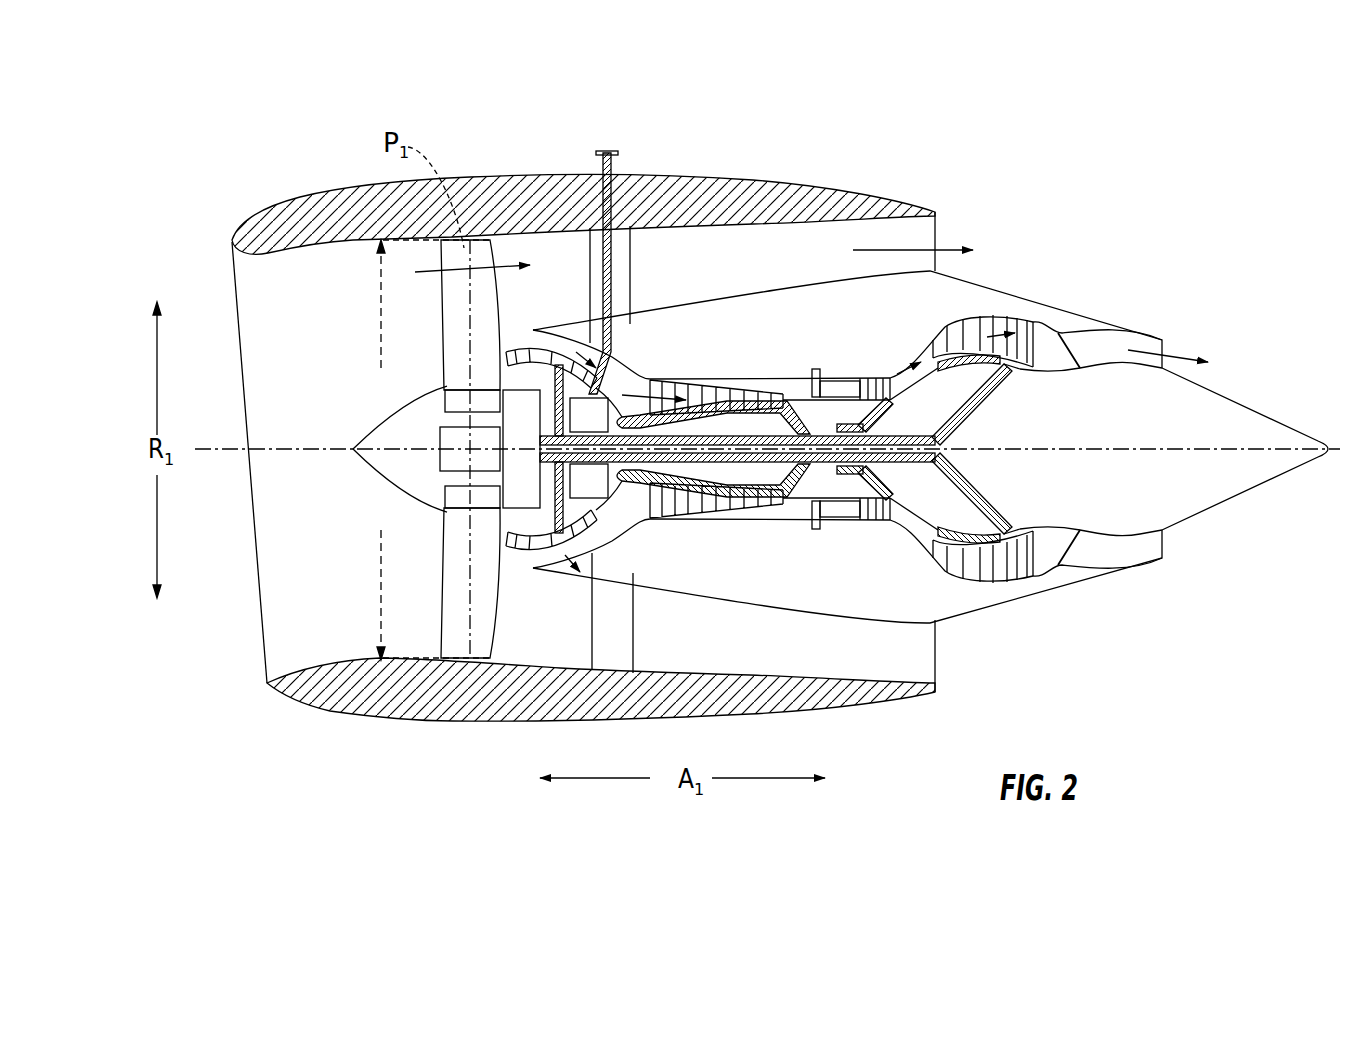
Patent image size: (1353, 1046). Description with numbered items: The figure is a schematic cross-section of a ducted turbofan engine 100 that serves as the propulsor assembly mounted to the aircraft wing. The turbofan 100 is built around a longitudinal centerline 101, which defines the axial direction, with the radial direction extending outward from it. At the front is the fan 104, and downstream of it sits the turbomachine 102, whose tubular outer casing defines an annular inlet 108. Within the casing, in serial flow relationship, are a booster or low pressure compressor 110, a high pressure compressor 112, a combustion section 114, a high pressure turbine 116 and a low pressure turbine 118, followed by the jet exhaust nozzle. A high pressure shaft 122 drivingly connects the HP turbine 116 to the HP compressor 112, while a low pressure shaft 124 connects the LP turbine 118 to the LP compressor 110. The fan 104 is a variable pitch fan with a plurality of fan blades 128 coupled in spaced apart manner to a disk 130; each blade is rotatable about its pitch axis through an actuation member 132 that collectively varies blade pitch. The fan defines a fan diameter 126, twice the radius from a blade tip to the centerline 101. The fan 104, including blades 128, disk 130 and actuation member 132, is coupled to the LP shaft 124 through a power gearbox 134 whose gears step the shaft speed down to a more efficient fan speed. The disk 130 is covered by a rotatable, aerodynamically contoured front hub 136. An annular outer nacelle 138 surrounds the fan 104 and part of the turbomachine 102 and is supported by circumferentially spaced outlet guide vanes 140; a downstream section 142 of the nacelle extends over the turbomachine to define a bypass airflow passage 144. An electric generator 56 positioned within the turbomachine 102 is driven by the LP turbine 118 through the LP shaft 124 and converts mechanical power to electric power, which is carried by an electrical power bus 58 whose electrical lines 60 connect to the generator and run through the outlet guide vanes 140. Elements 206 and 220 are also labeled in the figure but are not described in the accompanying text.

The turbofan engine 100 is at (1033, 205).
The longitudinal centerline 101 is at (1102, 447).
The turbomachine 102 is at (753, 268).
The fan 104 is at (353, 262).
The annular inlet 108 is at (535, 553).
The low pressure compressor 110 is at (582, 568).
The high pressure compressor 112 is at (663, 505).
The combustion section 114 is at (834, 518).
The high pressure turbine 116 is at (905, 520).
The low pressure turbine 118 is at (1015, 578).
The high pressure shaft 122 is at (834, 392).
The low pressure shaft 124 is at (915, 430).
The fan diameter 126 is at (380, 617).
The fan blades 128 is at (440, 590).
The disk 130 is at (462, 401).
The actuation member 132 is at (441, 433).
The power gearbox 134 is at (505, 356).
The front hub 136 is at (355, 468).
The outer nacelle 138 is at (485, 720).
The outlet guide vanes 140 is at (636, 259).
The downstream section of the nacelle 142 is at (866, 195).
The bypass airflow passage 144 is at (820, 267).
The core cowl 206 is at (790, 605).
The nozzle strut 220 is at (1078, 550).
The electric generator 56 is at (597, 490).
The electrical power bus 58 is at (589, 160).
The electrical lines 60 is at (614, 165).